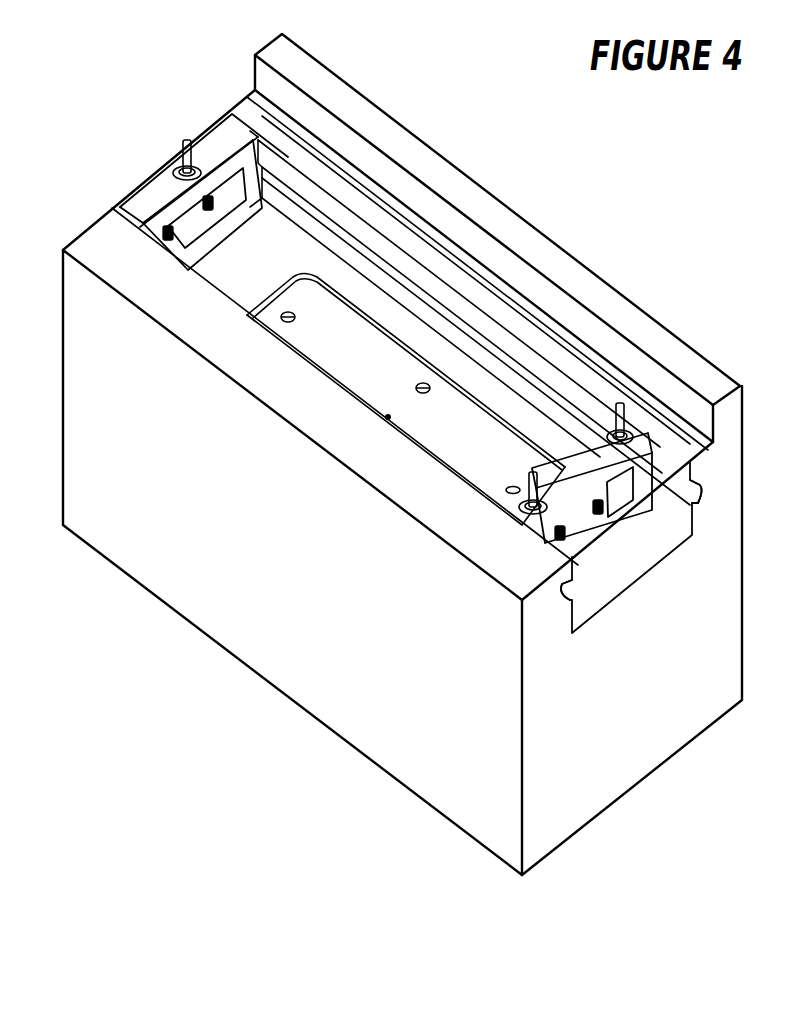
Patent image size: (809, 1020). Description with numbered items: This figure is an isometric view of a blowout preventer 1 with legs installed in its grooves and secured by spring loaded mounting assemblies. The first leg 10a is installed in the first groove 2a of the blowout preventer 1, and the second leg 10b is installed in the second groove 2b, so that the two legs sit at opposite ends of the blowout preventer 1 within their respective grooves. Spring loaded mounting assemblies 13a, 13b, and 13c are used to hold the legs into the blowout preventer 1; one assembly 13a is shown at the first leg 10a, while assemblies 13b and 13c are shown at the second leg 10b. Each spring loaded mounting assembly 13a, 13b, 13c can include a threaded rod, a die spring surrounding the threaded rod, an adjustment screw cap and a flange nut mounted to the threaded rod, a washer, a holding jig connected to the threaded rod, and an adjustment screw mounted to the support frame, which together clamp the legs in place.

The blowout preventer 1 is at (657, 737).
The first groove 2a is at (682, 497).
The second groove 2b is at (578, 588).
The first leg 10a is at (153, 193).
The second leg 10b is at (602, 537).
The spring loaded mounting assembly 13a is at (178, 163).
The spring loaded mounting assembly 13b is at (633, 434).
The spring loaded mounting assembly 13c is at (547, 498).